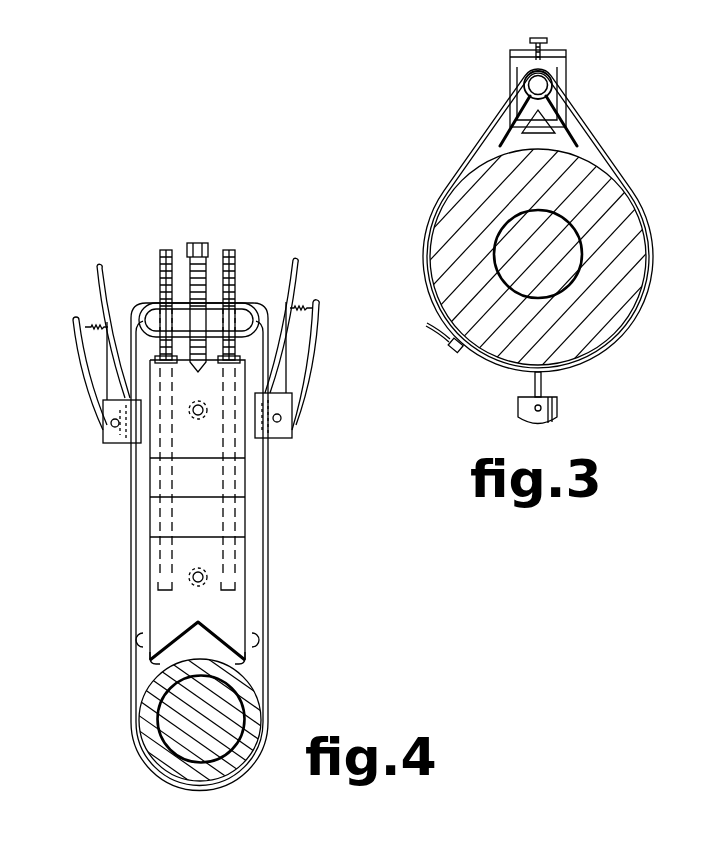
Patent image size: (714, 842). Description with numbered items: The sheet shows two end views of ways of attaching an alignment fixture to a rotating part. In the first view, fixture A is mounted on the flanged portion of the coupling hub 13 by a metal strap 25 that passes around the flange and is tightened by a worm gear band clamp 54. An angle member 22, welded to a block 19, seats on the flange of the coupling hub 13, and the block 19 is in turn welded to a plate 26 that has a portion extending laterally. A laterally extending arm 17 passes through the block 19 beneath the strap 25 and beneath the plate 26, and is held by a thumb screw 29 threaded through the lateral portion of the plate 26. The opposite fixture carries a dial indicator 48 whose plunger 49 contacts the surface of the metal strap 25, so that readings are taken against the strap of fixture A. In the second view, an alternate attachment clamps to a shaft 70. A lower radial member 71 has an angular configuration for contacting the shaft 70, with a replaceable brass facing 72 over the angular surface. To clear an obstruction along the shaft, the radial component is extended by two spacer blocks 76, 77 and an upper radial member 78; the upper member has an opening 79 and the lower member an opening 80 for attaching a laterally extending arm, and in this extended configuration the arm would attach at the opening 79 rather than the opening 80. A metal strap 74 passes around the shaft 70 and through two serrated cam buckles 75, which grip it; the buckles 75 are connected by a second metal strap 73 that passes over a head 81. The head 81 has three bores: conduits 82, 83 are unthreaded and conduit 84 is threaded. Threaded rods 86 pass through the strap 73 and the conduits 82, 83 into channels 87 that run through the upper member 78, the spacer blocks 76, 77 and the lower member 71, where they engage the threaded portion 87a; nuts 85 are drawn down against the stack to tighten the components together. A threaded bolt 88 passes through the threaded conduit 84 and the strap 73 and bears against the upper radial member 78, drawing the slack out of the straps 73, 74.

In FIG. 3, the coupling hub 13 is at (451, 198).
In FIG. 3, the laterally extending arm 17 is at (553, 92).
In FIG. 3, the block 19 is at (520, 103).
In FIG. 3, the angle member 22 is at (570, 145).
In FIG. 3, the metal strap 25 is at (477, 143).
In FIG. 3, the plate 26 is at (512, 63).
In FIG. 3, the thumb screw 29 is at (541, 42).
In FIG. 3, the dial indicator 48 is at (559, 410).
In FIG. 3, the plunger 49 is at (535, 390).
In FIG. 3, the worm gear band clamp 54 is at (452, 352).
In FIG. 4, the shaft 70 is at (255, 725).
In FIG. 4, the lower radial member 71 is at (160, 612).
In FIG. 4, the replaceable brass facing 72 is at (255, 652).
In FIG. 4, the metal strap 73 is at (243, 300).
In FIG. 4, the metal strap 74 is at (270, 493).
In FIG. 4, the serrated cam buckles 75 is at (103, 407).
In FIG. 4, the spacer block 76 is at (240, 523).
In FIG. 4, the spacer block 77 is at (160, 487).
In FIG. 4, the upper radial member 78 is at (188, 445).
In FIG. 4, the opening 79 is at (193, 413).
In FIG. 4, the opening 80 is at (207, 574).
In FIG. 4, the head 81 is at (240, 322).
In FIG. 4, the conduit 82 is at (160, 316).
In FIG. 4, the conduit 83 is at (236, 323).
In FIG. 4, the threaded conduit 84 is at (212, 317).
In FIG. 4, the nuts 85 is at (160, 350).
In FIG. 4, the threaded rods 86 is at (161, 262).
In FIG. 4, the channels 87 is at (160, 527).
In FIG. 4, the threaded portion 87a is at (160, 556).
In FIG. 4, the threaded bolt 88 is at (196, 243).